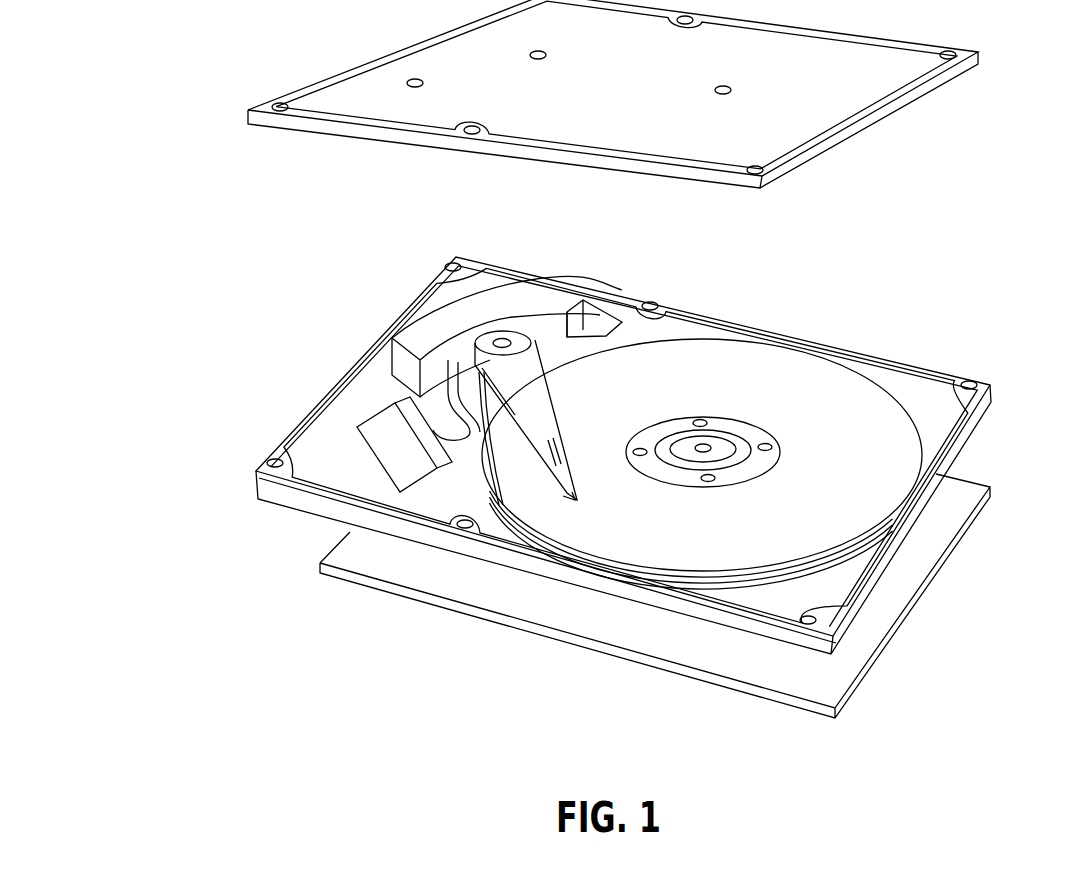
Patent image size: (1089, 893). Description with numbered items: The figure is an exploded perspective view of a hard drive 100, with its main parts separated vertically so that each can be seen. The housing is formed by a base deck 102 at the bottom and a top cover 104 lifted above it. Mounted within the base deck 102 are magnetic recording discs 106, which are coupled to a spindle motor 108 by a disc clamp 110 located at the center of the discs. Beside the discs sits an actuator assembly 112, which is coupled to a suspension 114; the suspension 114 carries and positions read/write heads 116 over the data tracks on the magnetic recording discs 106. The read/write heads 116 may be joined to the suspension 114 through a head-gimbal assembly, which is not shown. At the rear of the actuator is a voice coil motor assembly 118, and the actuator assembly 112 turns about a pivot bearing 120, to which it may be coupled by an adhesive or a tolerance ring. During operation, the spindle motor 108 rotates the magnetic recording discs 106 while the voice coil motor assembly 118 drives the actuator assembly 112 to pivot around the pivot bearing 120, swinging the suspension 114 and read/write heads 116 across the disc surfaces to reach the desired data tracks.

The hard drive 100 is at (158, 46).
The base deck 102 is at (967, 423).
The top cover 104 is at (810, 83).
The magnetic recording discs 106 is at (868, 472).
The spindle motor 108 is at (713, 447).
The disc clamp 110 is at (750, 463).
The actuator assembly 112 is at (544, 400).
The suspension 114 is at (607, 460).
The read/write heads 116 is at (577, 498).
The voice coil motor assembly 118 is at (430, 296).
The pivot bearing 120 is at (510, 343).